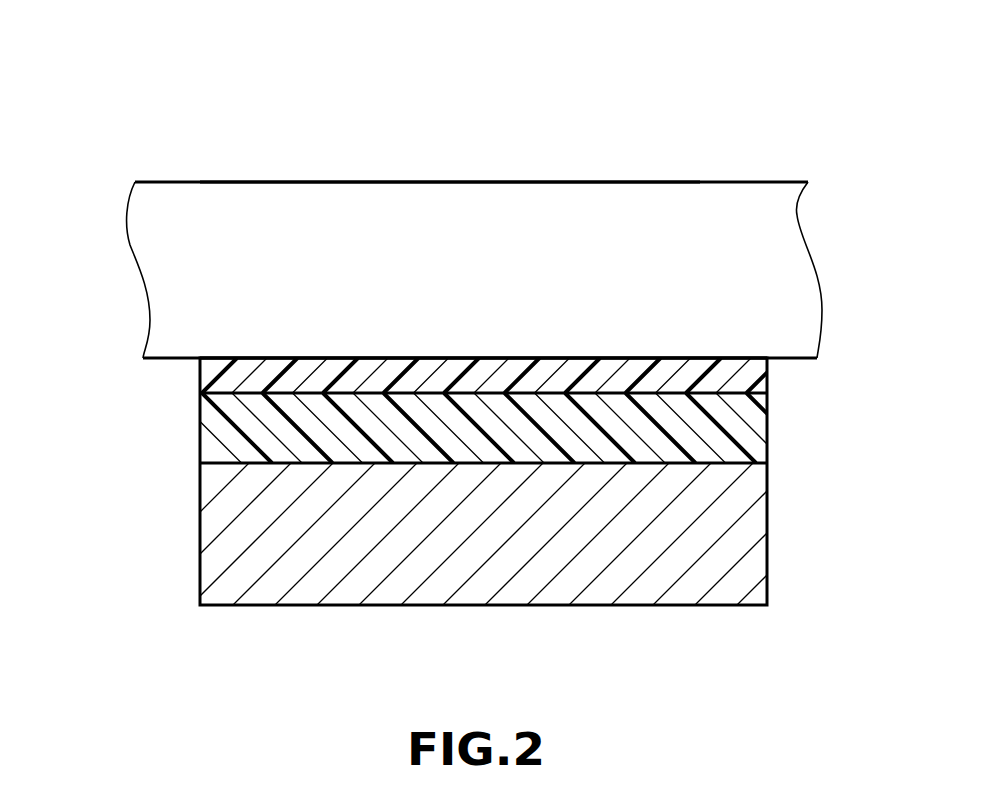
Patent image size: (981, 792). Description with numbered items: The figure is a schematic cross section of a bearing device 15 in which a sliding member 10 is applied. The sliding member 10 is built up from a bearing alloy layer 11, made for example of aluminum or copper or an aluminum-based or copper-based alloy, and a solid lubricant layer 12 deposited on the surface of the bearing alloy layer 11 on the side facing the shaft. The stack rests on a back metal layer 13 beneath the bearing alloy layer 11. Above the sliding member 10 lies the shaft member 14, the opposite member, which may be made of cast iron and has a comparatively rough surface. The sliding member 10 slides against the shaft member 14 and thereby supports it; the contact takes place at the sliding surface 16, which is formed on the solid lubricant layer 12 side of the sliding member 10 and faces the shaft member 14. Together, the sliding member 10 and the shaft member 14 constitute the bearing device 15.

The sliding member 10 is at (477, 467).
The bearing alloy layer 11 is at (200, 438).
The solid lubricant layer 12 is at (200, 380).
The back metal layer 13 is at (200, 537).
The shaft member 14 is at (297, 181).
The bearing device 15 is at (662, 157).
The sliding surface 16 is at (285, 357).